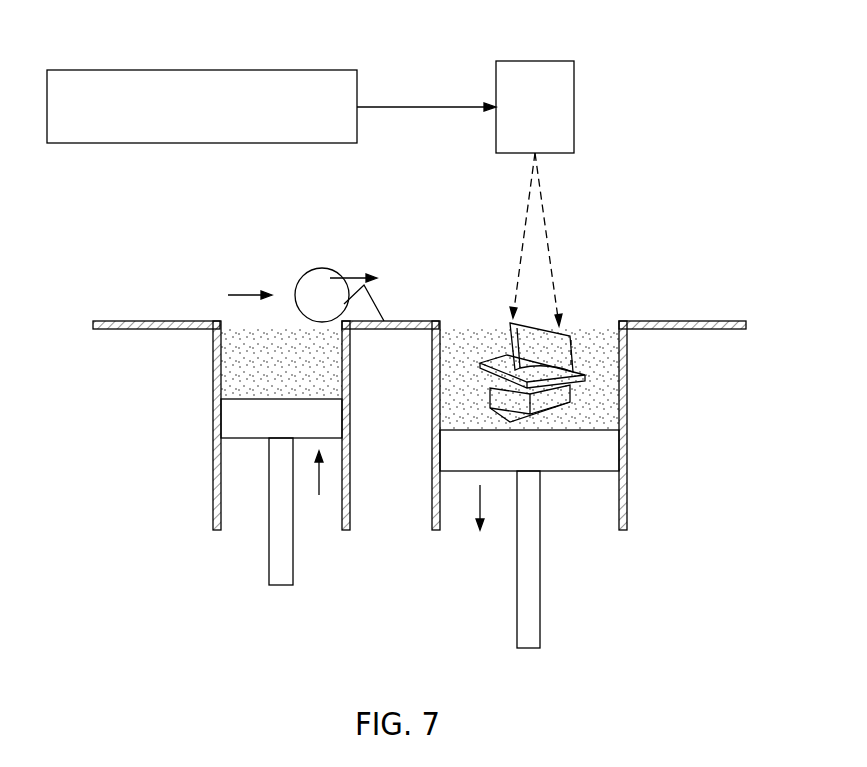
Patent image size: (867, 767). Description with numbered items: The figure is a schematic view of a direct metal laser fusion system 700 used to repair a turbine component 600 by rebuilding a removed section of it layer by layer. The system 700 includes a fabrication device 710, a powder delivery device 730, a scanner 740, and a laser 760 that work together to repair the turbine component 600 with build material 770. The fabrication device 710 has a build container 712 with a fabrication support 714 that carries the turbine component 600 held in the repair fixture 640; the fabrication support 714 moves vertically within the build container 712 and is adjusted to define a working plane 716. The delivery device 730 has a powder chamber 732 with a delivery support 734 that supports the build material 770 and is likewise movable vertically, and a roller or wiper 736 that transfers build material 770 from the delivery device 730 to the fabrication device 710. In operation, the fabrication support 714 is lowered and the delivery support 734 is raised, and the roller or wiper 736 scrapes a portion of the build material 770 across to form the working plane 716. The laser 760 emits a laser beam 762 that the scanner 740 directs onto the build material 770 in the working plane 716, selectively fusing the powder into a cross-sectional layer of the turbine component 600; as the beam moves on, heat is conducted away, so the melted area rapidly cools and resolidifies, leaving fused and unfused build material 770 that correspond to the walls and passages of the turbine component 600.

The direct metal laser fusion system 700 is at (699, 43).
The laser 760 is at (208, 70).
The scanner 740 is at (535, 61).
The laser beam 762 is at (425, 106).
The roller or wiper 736 is at (322, 268).
The powder delivery device 730 is at (246, 453).
The powder chamber 732 is at (215, 371).
The build material 770 is at (228, 352).
The delivery support 734 is at (228, 423).
The fabrication device 710 is at (593, 460).
The build container 712 is at (622, 342).
The working plane 716 is at (597, 320).
The fabrication support 714 is at (612, 448).
The turbine component 600 is at (563, 359).
The repair fixture 640 is at (497, 418).